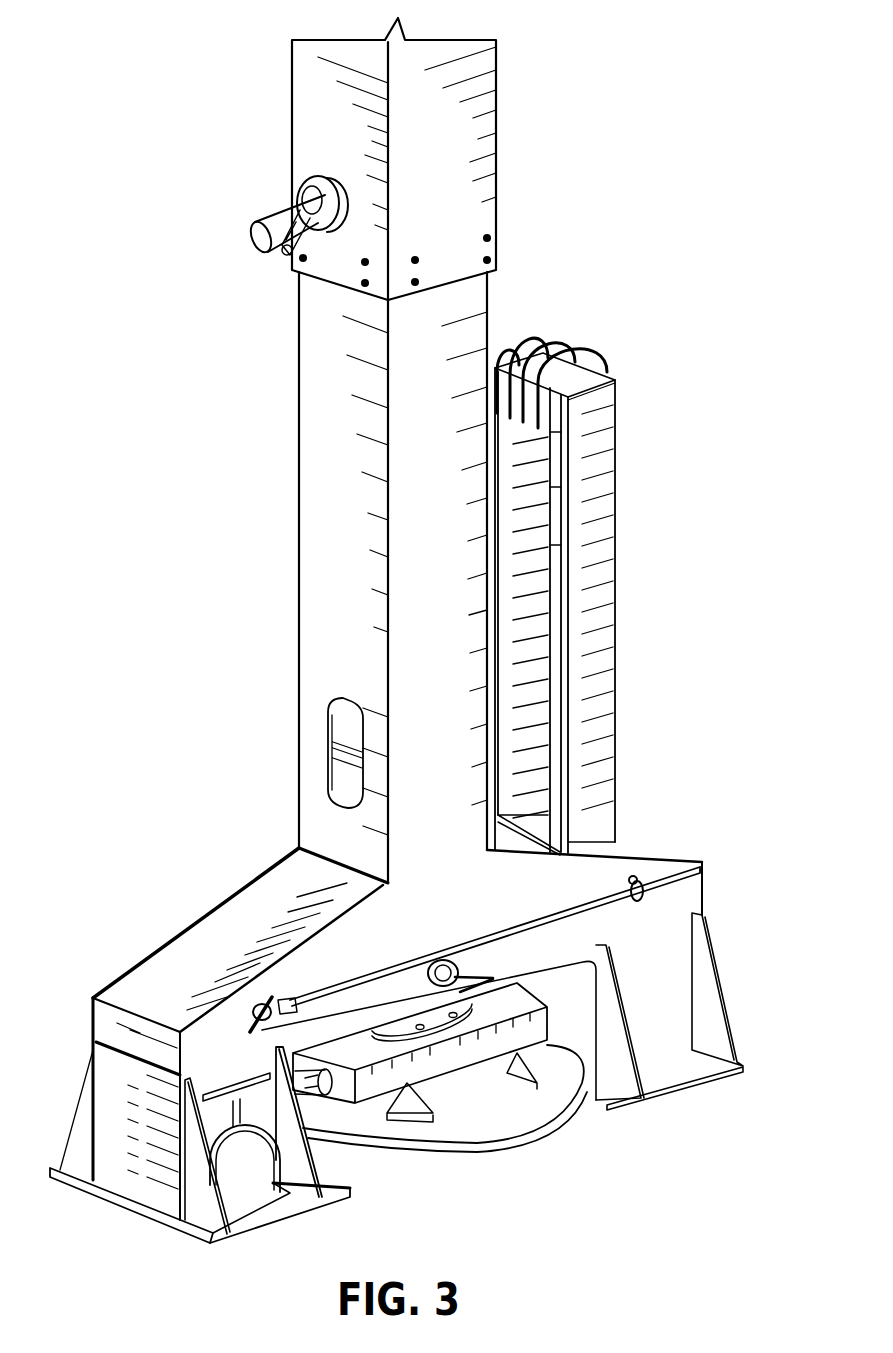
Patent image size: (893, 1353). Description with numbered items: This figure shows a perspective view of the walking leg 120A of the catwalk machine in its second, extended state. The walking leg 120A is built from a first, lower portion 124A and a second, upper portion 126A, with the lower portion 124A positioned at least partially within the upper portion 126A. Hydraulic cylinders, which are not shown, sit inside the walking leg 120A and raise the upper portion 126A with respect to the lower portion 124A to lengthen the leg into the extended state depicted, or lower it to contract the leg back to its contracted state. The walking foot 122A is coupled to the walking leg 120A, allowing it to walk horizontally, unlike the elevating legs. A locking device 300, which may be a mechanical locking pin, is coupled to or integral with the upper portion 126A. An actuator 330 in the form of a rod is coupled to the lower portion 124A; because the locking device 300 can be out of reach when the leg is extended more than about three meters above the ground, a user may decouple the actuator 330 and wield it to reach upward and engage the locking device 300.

The walking leg 120A is at (167, 78).
The walking foot 122A is at (497, 1113).
The lower portion 124A is at (298, 424).
The upper portion 126A is at (496, 122).
The locking device 300 is at (277, 183).
The actuator 330 is at (492, 940).